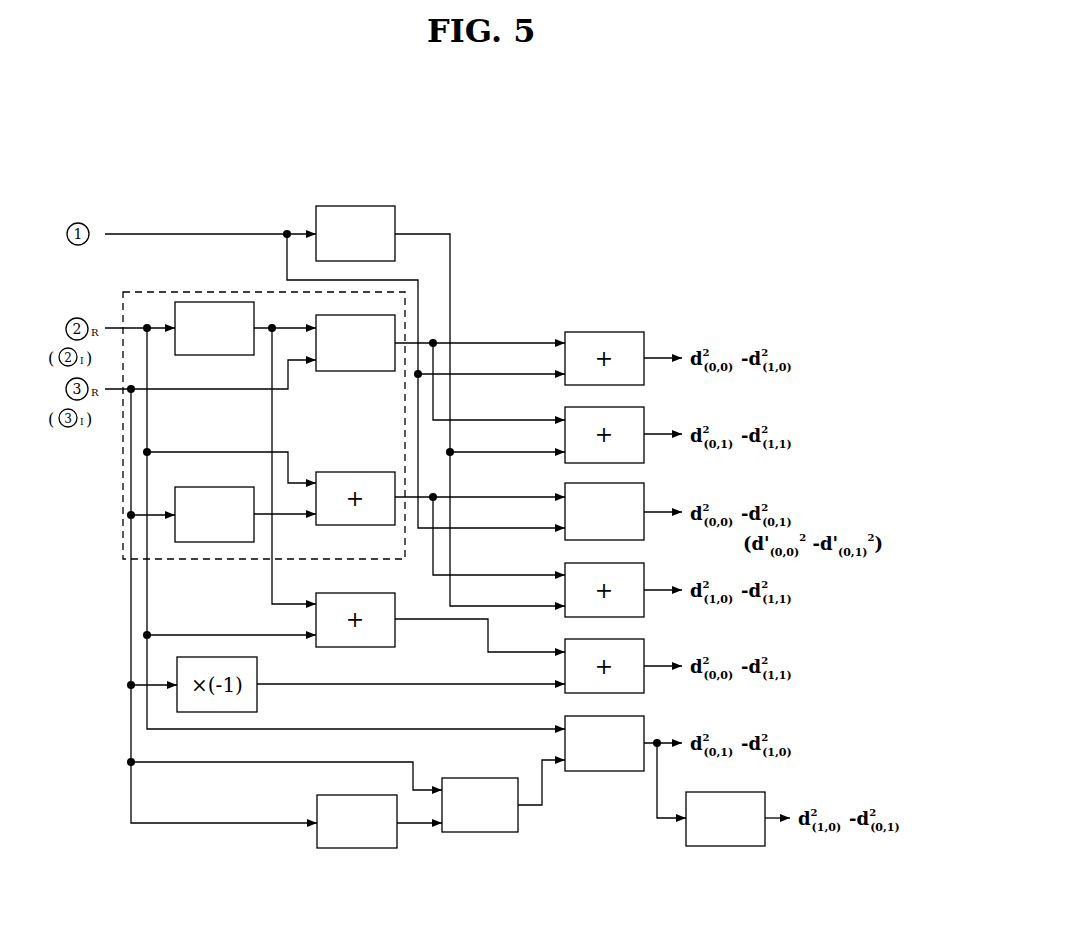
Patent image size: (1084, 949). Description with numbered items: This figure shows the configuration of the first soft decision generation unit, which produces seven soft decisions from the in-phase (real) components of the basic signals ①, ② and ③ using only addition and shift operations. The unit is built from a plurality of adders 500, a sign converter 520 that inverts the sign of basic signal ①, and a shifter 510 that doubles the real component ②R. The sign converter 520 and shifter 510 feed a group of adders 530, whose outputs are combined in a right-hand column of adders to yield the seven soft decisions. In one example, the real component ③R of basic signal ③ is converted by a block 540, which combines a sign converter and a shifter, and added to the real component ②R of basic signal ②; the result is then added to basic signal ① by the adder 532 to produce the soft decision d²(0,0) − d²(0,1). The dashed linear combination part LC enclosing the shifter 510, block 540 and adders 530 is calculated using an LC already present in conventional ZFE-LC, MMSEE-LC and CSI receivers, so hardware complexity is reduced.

The plurality of adders 500 is at (682, 862).
The shifter 510 is at (213, 302).
The sign converter 520 is at (352, 206).
The adders 530 is at (353, 372).
The adder 532 is at (644, 483).
The block combining a sign converter and a shifter 540 is at (215, 542).
The linear combination part LC is at (153, 292).